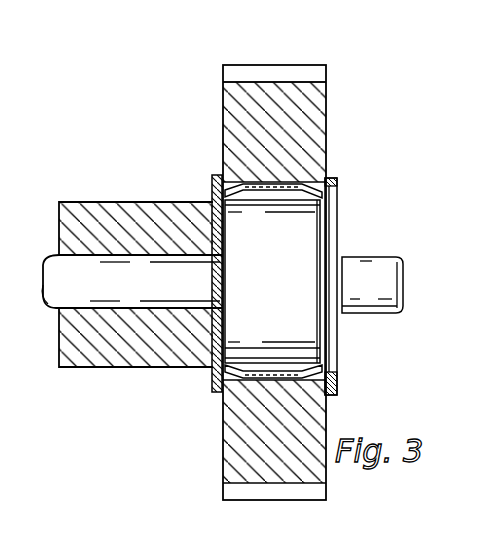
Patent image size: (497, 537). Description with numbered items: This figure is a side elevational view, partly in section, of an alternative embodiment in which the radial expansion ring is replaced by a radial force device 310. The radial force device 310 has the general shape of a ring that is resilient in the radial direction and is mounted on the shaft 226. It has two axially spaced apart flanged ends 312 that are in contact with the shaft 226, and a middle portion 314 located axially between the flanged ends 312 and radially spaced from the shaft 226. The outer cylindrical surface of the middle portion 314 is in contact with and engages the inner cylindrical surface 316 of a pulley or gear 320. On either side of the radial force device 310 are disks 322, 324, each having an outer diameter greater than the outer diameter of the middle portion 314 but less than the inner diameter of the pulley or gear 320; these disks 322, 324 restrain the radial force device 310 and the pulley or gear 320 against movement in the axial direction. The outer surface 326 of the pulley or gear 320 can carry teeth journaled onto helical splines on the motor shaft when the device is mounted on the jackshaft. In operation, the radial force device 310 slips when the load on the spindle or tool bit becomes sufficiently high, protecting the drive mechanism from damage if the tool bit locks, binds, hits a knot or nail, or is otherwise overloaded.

The shaft 226 is at (340, 335).
The radial force device 310 is at (268, 228).
The flanged ends 312 is at (222, 173).
The middle portion 314 is at (268, 381).
The inner cylindrical surface 316 is at (273, 222).
The pulley or gear 320 is at (328, 98).
The disk 322 is at (337, 216).
The disk 324 is at (215, 342).
The outer surface 326 is at (292, 65).